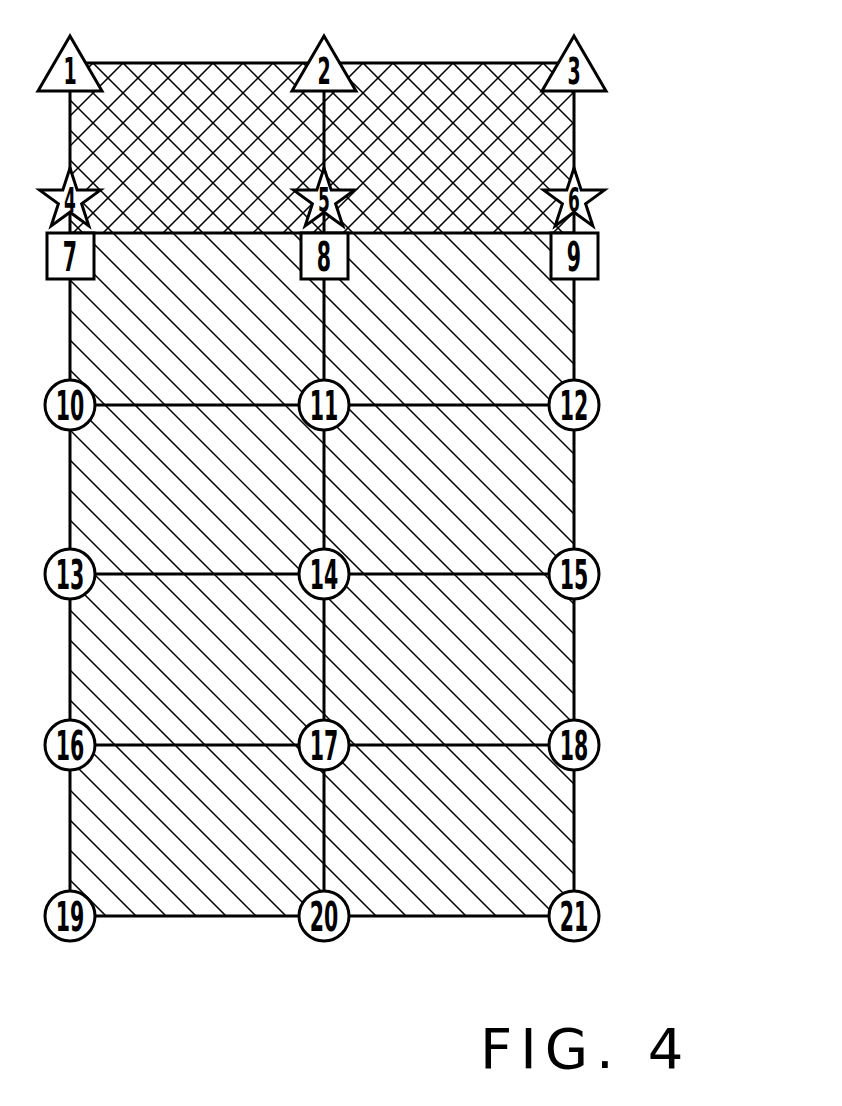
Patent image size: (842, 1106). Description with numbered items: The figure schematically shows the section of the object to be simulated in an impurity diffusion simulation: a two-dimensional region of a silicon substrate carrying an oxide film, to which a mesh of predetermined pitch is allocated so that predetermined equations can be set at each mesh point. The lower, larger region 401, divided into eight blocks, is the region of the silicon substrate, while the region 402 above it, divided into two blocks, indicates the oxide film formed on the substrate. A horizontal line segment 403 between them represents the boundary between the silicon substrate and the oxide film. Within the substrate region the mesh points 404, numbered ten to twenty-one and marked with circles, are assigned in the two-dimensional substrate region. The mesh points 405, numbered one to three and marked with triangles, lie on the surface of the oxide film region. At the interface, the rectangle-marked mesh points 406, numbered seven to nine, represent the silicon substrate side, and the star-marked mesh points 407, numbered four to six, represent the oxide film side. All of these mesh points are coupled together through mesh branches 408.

The region of the silicon substrate 401 is at (465, 515).
The region of the oxide film 402 is at (455, 137).
The line segment 403 is at (470, 240).
The mesh points 404 is at (600, 575).
The mesh points 405 is at (591, 67).
The mesh points 406 is at (598, 258).
The mesh points 407 is at (605, 199).
The mesh branches 408 is at (330, 675).